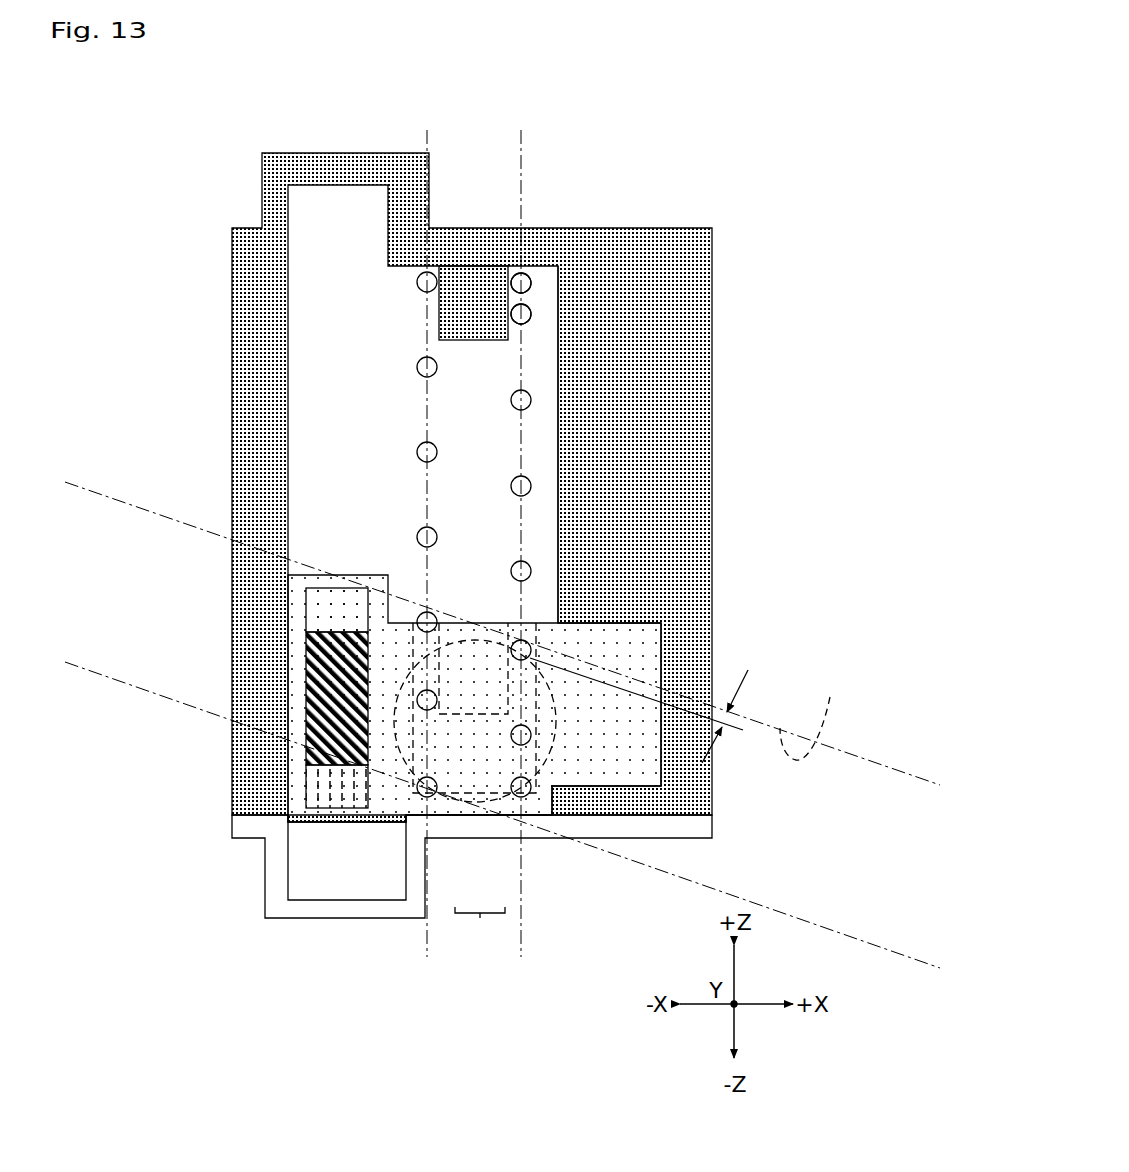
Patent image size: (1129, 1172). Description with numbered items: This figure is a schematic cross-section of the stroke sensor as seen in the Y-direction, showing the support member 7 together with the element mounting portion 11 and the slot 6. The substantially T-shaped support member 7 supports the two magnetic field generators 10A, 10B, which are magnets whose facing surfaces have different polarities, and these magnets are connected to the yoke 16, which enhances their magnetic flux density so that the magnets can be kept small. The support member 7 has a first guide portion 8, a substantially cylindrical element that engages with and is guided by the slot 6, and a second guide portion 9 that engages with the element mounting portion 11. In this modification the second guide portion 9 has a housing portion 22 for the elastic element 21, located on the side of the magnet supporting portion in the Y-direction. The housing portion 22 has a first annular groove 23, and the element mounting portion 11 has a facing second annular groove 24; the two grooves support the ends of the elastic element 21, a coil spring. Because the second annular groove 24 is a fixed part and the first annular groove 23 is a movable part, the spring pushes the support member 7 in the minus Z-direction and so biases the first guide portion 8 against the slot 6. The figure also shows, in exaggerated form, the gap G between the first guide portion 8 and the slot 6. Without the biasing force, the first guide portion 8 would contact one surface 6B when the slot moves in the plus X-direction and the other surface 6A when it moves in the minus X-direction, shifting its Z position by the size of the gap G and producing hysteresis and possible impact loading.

The element mounting portion 11 is at (303, 177).
The housing portion 22 is at (545, 380).
The second annular groove 24 is at (510, 302).
The elastic element 21 is at (533, 486).
The first annular groove 23 is at (508, 758).
The magnetic field generator 10A is at (317, 598).
The yoke 16 is at (307, 713).
The magnetic field generator 10B is at (318, 790).
The second guide portion 9 is at (385, 787).
The first guide portion 8 is at (502, 817).
The support member 7 is at (480, 928).
The other surface of slot 6A is at (481, 628).
The one surface of slot 6B is at (481, 808).
The slot 6 is at (813, 716).
The gap G is at (647, 702).